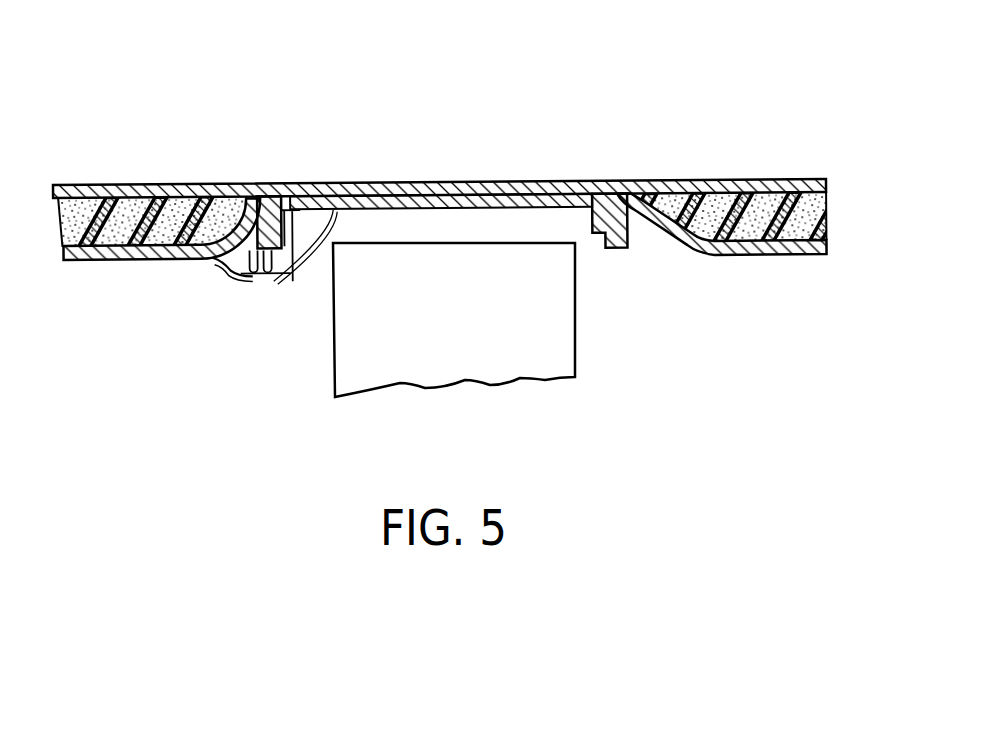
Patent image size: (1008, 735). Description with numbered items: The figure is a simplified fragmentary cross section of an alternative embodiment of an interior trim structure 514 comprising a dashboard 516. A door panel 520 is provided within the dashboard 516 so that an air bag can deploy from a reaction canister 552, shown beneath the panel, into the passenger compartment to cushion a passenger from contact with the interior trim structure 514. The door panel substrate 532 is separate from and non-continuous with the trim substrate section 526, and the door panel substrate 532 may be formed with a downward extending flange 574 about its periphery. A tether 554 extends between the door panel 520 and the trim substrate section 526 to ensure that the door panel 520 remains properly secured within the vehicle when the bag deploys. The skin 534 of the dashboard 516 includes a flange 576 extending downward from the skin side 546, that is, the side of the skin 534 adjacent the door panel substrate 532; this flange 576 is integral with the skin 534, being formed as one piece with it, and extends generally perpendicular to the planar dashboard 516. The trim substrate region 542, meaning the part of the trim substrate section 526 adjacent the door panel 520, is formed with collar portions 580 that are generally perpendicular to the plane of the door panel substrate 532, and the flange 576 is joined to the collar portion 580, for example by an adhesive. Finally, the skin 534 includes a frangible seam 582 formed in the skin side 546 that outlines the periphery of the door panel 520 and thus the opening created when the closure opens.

The interior trim structure 514 is at (752, 118).
The skin 534 is at (88, 186).
The trim substrate section 526 is at (102, 262).
The skin side 546 is at (150, 262).
The dashboard 516 is at (680, 183).
The door panel 520 is at (400, 185).
The door panel substrate 532 is at (474, 216).
The frangible seam 582 is at (280, 186).
The flange 574 is at (292, 280).
The flange 576 is at (278, 275).
The collar portions 580 is at (260, 275).
The tether 554 is at (250, 281).
The trim substrate region 542 is at (663, 260).
The reaction canister 552 is at (482, 335).